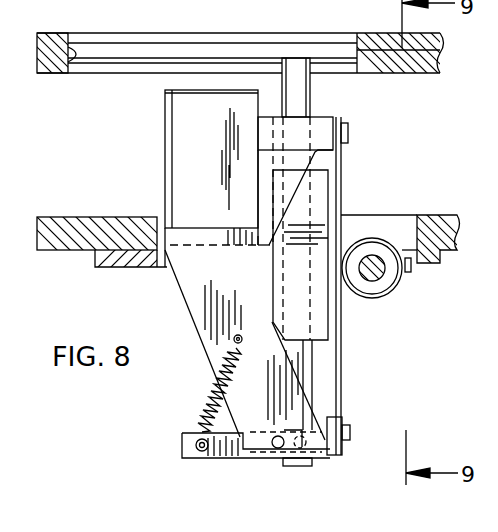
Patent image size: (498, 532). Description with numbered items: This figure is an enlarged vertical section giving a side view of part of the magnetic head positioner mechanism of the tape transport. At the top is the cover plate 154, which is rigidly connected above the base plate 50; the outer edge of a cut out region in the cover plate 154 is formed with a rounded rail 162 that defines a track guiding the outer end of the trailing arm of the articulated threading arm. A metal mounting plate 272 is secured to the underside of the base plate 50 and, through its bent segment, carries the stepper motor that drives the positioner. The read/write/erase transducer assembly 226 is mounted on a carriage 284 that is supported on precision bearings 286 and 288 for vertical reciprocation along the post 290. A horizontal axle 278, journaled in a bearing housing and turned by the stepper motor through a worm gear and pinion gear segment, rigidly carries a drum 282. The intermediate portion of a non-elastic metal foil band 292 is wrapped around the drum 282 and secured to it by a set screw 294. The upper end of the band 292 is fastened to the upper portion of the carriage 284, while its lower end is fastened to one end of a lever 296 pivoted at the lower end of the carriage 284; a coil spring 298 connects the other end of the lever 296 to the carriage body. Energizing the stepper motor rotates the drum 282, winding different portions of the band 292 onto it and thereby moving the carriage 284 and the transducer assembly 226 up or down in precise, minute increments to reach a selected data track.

The base plate 50 is at (85, 222).
The cover plate 154 is at (385, 67).
The rounded rail 162 is at (101, 58).
The read/write/erase transducer assembly 226 is at (170, 134).
The mounting plate 272 is at (107, 258).
The horizontal axle 278 is at (378, 280).
The drum 282 is at (383, 242).
The carriage 284 is at (198, 297).
The precision bearing 286 is at (322, 332).
The precision bearing 288 is at (332, 457).
The post 290 is at (297, 83).
The non-elastic band 292 is at (359, 238).
The set screw 294 is at (410, 270).
The lever 296 is at (227, 455).
The coil spring 298 is at (200, 405).